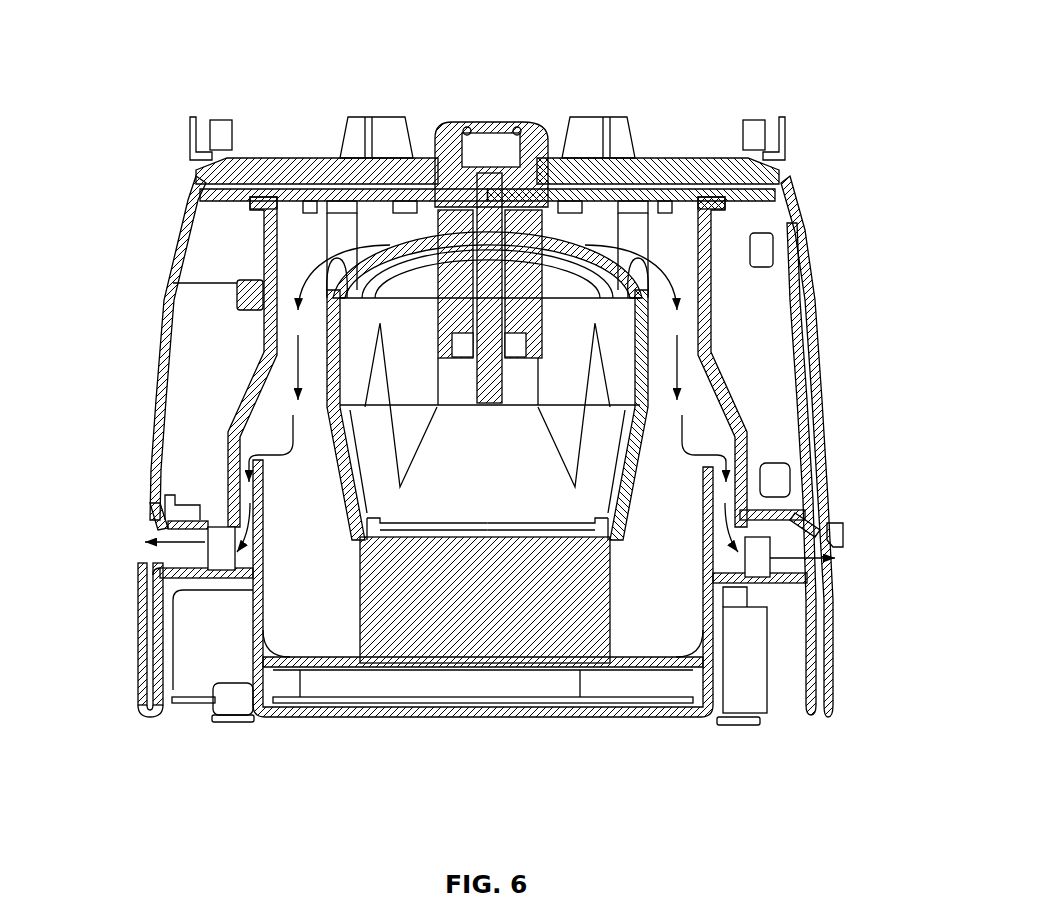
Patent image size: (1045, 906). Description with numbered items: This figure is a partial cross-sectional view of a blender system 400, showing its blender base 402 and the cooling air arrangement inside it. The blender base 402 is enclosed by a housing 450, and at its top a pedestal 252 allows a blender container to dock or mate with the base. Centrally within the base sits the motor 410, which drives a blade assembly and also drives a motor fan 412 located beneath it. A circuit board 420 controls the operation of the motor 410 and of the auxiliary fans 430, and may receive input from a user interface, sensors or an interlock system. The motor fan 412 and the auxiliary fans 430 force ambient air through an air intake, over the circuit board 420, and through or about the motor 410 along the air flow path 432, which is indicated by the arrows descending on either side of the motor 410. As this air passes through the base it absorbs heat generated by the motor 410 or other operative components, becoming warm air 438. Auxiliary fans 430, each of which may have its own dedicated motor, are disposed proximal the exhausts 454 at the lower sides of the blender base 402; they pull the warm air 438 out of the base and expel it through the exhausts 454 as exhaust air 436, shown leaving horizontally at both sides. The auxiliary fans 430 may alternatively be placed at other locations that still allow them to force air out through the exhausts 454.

The blender system 400 is at (790, 48).
The pedestal 252 is at (518, 255).
The blender base 402 is at (842, 258).
The housing 450 is at (165, 318).
The motor 410 is at (323, 377).
The air flow path 432 is at (680, 363).
The exhaust 454 is at (157, 527).
The exhaust air 436 is at (860, 597).
The warm air 438 is at (487, 411).
The auxiliary fan 430 is at (220, 557).
The motor fan 412 is at (393, 660).
The circuit board 420 is at (493, 703).